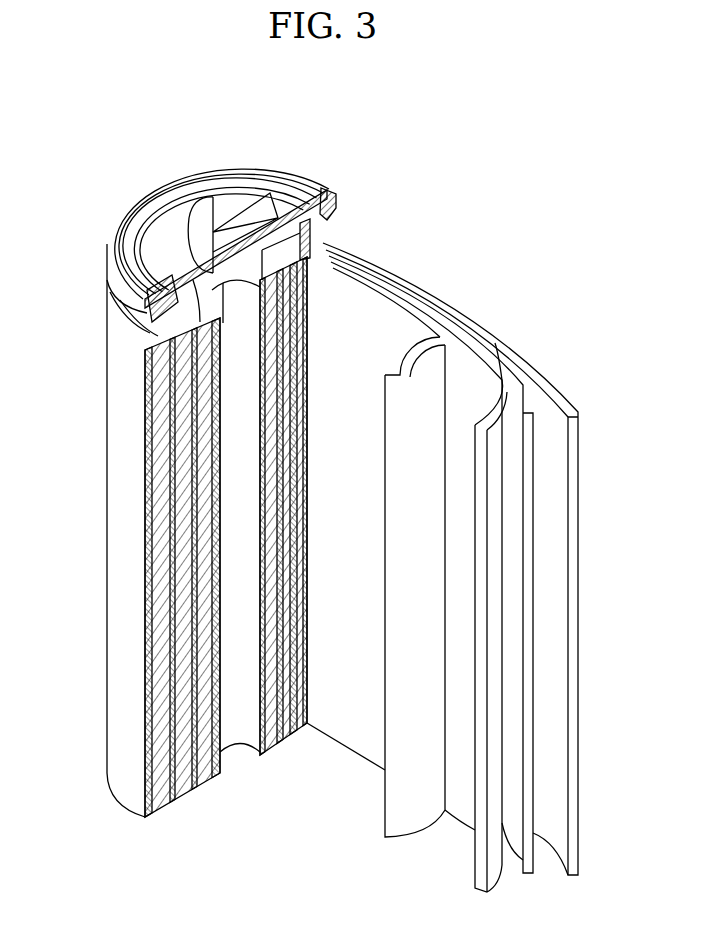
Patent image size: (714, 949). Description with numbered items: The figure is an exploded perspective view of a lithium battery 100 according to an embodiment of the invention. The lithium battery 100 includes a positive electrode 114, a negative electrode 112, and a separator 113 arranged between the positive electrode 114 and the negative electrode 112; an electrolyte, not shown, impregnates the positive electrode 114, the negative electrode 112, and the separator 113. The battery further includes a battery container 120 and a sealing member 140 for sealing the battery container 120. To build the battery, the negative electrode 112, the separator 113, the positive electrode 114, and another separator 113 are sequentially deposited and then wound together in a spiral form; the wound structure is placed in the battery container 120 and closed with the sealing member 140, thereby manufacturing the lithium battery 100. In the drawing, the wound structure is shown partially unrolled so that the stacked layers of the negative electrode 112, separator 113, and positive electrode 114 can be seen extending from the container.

The lithium battery 100 is at (346, 129).
The negative electrode 112 is at (556, 388).
The separator 113 is at (416, 376).
The positive electrode 114 is at (492, 386).
The battery container 120 is at (107, 530).
The sealing member 140 is at (215, 202).